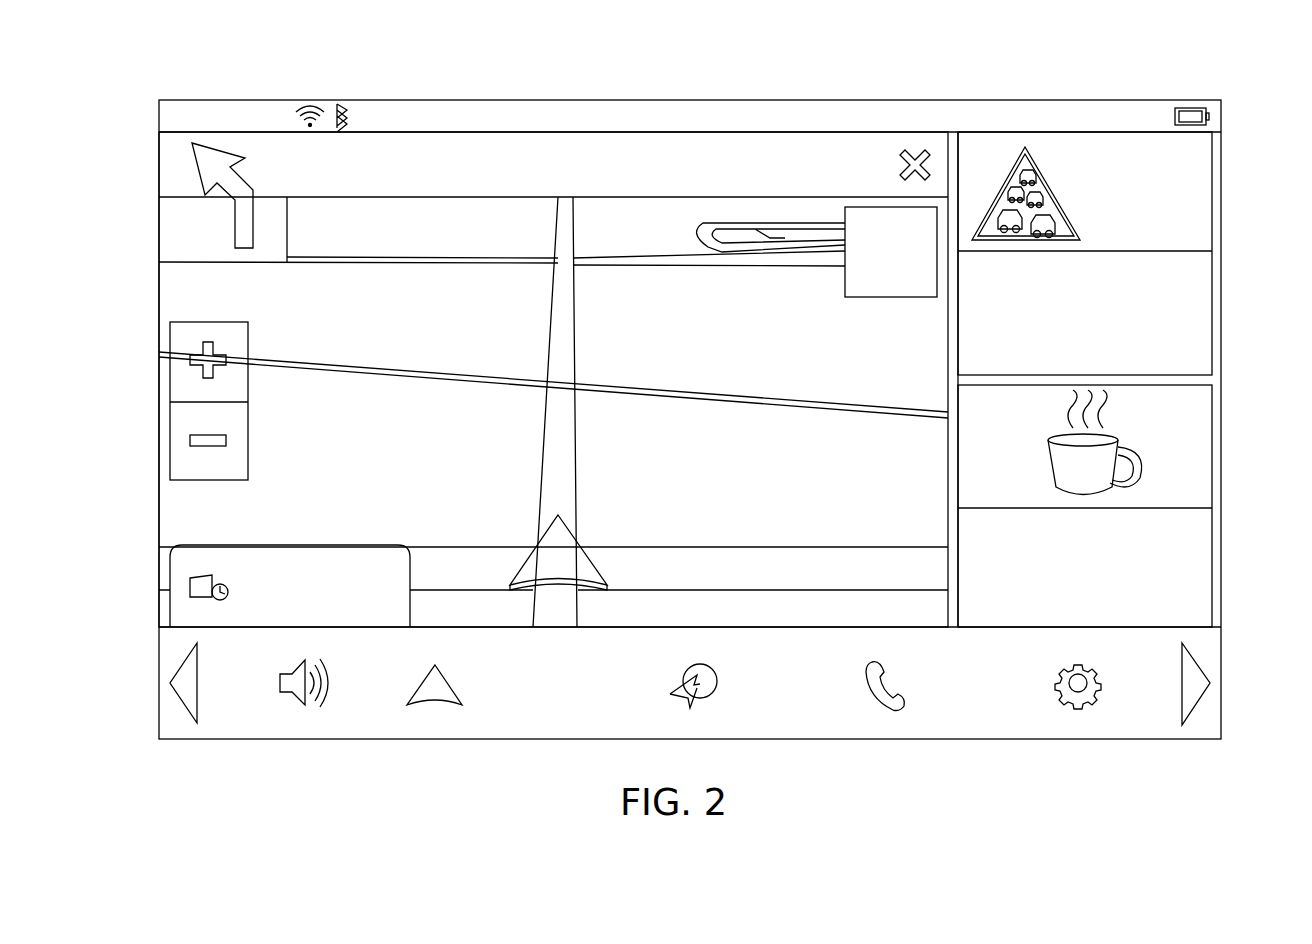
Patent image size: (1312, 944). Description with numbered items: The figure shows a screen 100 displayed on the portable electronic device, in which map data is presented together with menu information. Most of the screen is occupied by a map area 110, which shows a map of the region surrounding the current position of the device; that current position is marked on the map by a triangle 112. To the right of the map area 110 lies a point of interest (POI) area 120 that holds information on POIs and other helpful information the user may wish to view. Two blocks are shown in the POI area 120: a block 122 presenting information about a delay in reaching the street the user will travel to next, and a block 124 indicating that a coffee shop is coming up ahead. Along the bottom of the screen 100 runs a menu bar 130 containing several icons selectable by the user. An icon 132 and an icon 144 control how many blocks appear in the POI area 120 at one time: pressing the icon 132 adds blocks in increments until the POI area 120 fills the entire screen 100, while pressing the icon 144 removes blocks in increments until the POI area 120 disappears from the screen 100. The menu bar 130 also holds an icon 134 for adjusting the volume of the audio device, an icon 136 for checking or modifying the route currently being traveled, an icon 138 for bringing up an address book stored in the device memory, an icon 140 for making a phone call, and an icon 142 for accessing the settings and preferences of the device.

The screen 100 is at (203, 84).
The map area 110 is at (652, 230).
The triangle 112 is at (555, 538).
The point of interest (POI) area 120 is at (1212, 100).
The block 122 is at (1188, 235).
The block 124 is at (1188, 462).
The menu bar 130 is at (159, 627).
The icon 132 is at (180, 705).
The icon 134 is at (298, 707).
The icon 136 is at (503, 710).
The icon 138 is at (708, 690).
The icon 140 is at (872, 712).
The icon 142 is at (1076, 708).
The icon 144 is at (1195, 713).